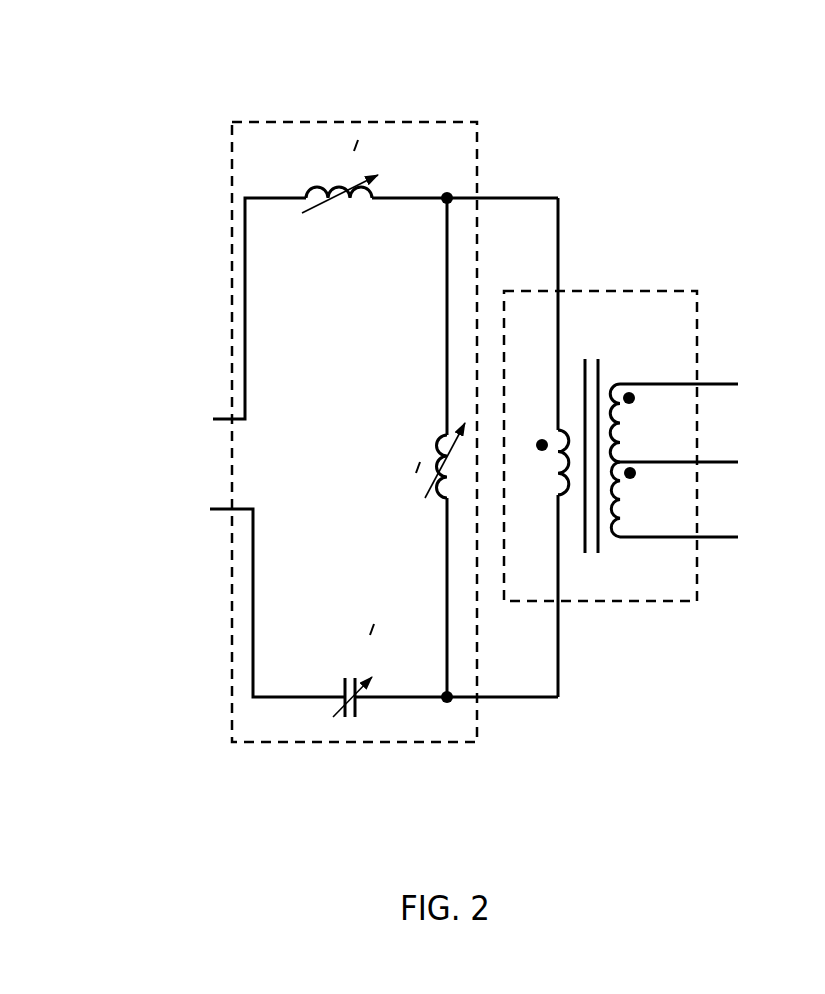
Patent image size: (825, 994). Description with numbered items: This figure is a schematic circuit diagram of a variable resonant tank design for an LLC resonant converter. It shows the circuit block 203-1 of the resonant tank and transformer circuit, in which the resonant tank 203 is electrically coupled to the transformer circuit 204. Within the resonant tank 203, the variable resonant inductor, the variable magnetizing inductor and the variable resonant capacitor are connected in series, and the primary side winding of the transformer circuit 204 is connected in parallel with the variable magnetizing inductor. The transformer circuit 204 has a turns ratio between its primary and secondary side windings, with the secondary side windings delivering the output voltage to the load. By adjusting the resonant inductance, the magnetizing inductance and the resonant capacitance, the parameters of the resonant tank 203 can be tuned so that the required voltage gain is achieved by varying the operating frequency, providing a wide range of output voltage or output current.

The circuit block of resonant tank and transformer circuit 203-1 is at (138, 63).
The resonant tank 203 is at (355, 122).
The transformer circuit 204 is at (600, 290).